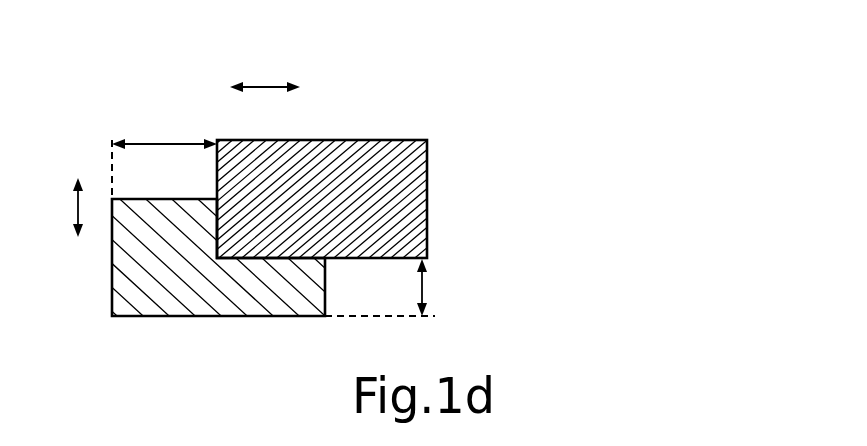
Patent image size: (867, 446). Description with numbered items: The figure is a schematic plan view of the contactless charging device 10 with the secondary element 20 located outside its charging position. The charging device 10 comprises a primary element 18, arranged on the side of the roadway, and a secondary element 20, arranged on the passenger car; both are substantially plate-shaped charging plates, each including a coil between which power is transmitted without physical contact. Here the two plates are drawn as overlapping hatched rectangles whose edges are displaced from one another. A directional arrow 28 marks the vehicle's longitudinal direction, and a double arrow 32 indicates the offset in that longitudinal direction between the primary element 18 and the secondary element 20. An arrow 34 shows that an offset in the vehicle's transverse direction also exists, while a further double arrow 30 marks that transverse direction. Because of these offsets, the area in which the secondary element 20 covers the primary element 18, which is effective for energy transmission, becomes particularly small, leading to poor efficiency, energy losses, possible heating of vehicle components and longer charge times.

The contactless charging device 10 is at (284, 227).
The primary element 18 is at (215, 307).
The secondary element 20 is at (348, 148).
The directional arrow 28 is at (267, 87).
The vertical displacement direction 30 is at (72, 210).
The double arrow 32 is at (165, 144).
The arrow 34 is at (422, 285).